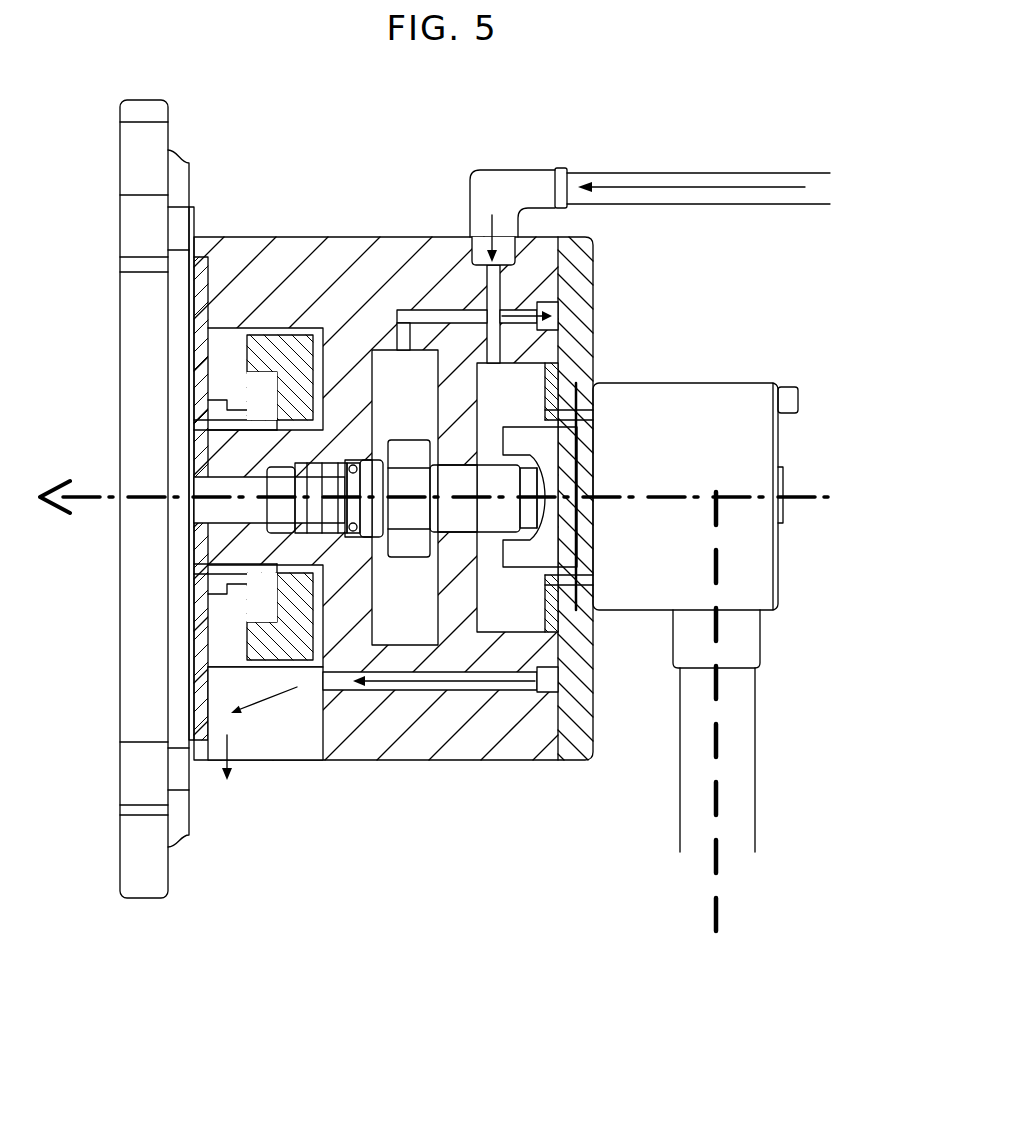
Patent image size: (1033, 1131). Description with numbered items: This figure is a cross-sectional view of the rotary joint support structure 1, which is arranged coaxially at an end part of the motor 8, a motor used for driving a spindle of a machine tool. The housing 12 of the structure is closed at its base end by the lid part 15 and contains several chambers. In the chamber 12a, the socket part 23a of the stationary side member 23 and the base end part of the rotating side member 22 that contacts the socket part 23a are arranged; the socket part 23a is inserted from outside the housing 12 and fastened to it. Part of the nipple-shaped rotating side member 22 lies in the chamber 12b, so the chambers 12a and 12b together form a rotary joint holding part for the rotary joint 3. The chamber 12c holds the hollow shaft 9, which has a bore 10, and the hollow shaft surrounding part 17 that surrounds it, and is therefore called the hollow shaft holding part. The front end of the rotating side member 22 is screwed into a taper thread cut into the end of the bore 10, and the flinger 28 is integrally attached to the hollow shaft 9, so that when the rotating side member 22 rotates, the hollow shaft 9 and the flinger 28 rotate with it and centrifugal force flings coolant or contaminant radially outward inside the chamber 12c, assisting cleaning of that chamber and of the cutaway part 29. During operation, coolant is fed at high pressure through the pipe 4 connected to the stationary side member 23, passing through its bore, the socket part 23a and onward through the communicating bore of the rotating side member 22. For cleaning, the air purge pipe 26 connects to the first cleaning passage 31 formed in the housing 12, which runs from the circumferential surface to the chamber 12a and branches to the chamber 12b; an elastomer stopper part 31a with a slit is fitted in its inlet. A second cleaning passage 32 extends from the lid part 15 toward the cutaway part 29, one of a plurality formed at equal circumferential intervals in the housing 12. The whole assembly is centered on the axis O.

The rotary joint support structure 1 is at (752, 150).
The rotary joint 3 is at (803, 575).
The pipe 4 is at (733, 792).
The motor 8 is at (207, 884).
The hollow shaft 9 is at (197, 555).
The bore 10 is at (197, 487).
The housing 12 is at (440, 462).
The chamber 12a is at (515, 392).
The chamber 12b is at (383, 370).
The chamber 12c is at (226, 340).
The lid part 15 is at (580, 308).
The hollow shaft surrounding part 17 is at (198, 378).
The rotating side member 22 is at (475, 517).
The stationary side member 23 is at (755, 430).
The socket part 23a is at (550, 442).
The air purge pipe 26 is at (515, 185).
The flinger 28 is at (268, 340).
The cutaway part 29 is at (283, 730).
The first cleaning passage 31 is at (495, 283).
The stopper part 31a is at (478, 252).
The second cleaning passage 32 is at (440, 683).
The axis O is at (828, 492).